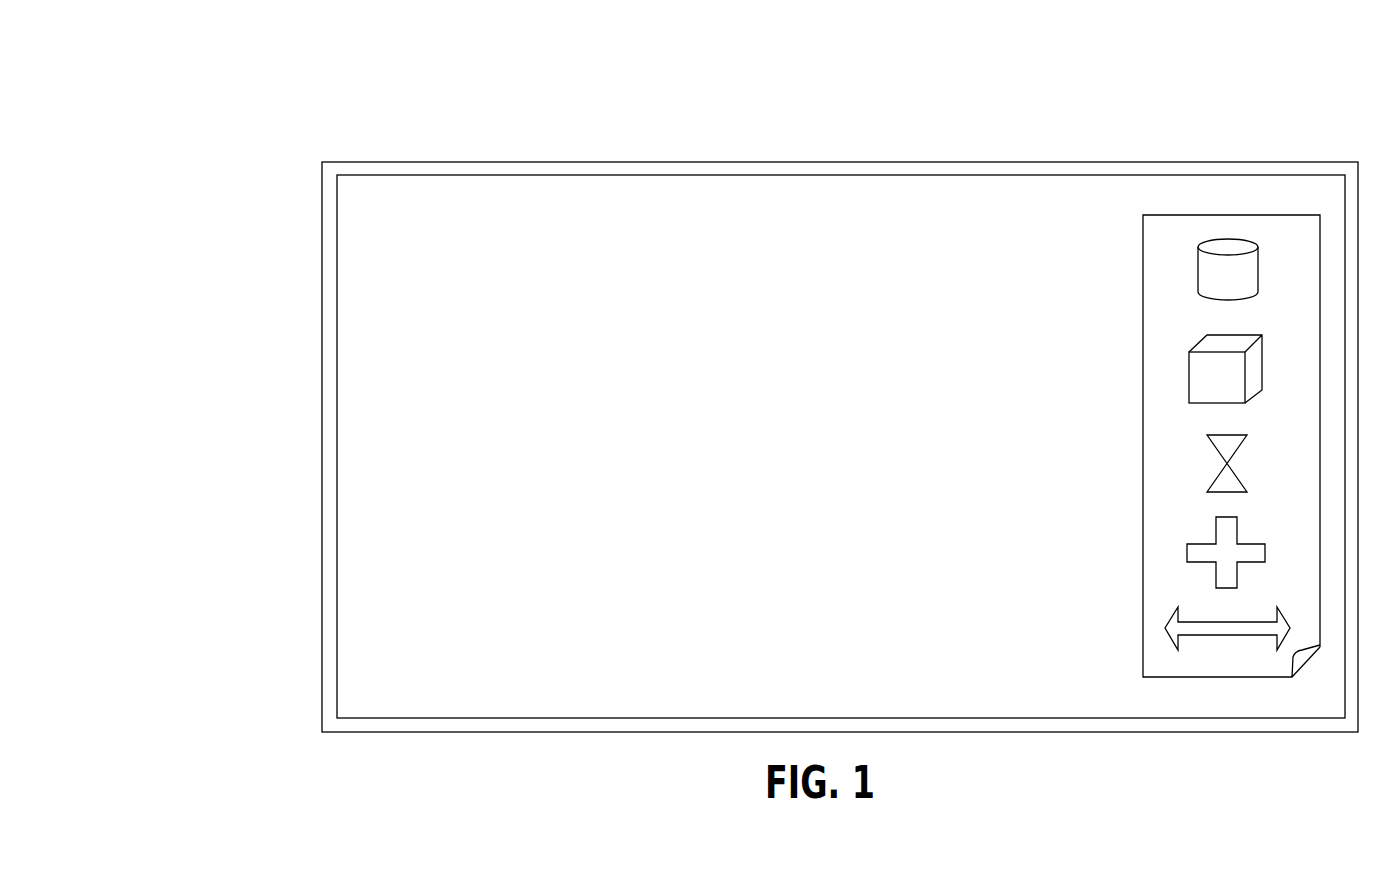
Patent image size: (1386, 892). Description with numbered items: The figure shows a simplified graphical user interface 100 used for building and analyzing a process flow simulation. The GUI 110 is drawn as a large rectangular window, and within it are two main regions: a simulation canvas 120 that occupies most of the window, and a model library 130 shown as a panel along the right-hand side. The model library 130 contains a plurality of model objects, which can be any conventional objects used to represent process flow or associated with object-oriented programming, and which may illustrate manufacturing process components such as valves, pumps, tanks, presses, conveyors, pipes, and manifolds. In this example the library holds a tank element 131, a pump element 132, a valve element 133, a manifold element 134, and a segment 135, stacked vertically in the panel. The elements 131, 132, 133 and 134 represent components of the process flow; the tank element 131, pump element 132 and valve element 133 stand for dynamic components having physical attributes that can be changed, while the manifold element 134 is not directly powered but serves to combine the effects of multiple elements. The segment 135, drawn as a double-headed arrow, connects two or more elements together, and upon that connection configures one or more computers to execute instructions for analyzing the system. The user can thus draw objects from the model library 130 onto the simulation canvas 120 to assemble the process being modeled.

The system 100 is at (457, 118).
The graphical user interface 110 is at (322, 368).
The simulation canvas 120 is at (697, 444).
The model library 130 is at (1277, 216).
The tank element 131 is at (1197, 275).
The pump element 132 is at (1189, 378).
The valve element 133 is at (1208, 465).
The manifold element 134 is at (1187, 553).
The segment 135 is at (1166, 628).